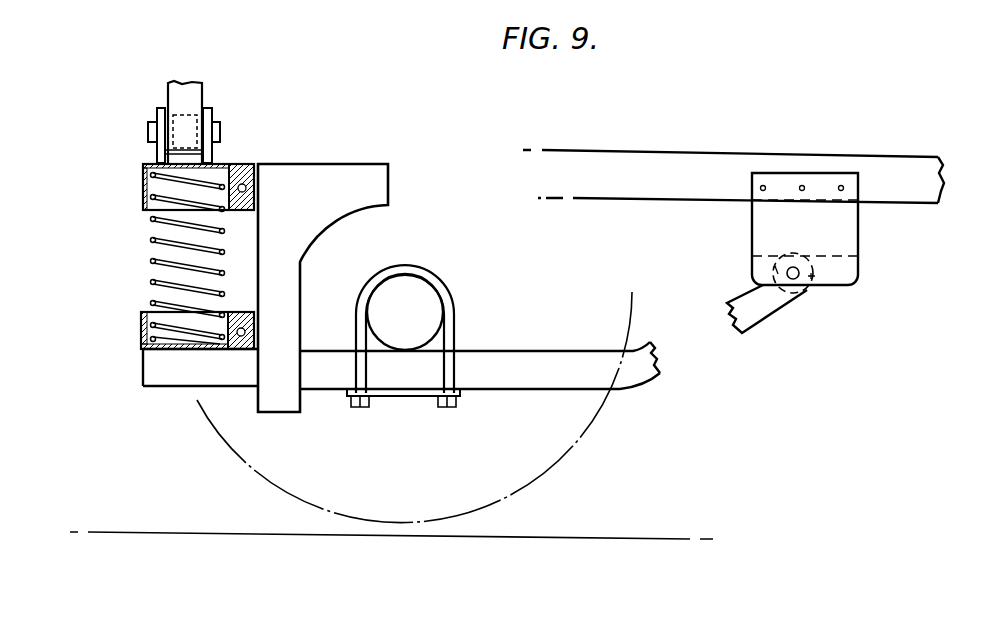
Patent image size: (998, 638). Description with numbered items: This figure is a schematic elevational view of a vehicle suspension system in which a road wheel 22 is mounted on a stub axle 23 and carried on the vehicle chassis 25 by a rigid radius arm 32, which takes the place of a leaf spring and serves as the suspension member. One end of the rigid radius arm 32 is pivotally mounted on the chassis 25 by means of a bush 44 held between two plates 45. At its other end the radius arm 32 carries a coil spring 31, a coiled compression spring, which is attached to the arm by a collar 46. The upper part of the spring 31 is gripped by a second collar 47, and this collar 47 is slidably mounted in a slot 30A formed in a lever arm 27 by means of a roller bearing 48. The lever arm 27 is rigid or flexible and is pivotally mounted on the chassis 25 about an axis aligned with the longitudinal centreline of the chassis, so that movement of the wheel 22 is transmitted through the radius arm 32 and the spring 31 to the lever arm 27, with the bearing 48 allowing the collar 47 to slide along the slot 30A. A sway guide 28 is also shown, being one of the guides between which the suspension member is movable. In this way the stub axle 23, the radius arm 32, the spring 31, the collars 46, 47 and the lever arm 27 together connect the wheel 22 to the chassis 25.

The road wheel 22 is at (537, 491).
The stub axle 23 is at (425, 293).
The vehicle chassis 25 is at (700, 160).
The lever arm 27 is at (185, 86).
The sway guide 28 is at (345, 202).
The slot 30A is at (198, 108).
The coil spring 31 is at (152, 260).
The rigid radius arm 32 is at (565, 358).
The bush 44 is at (822, 278).
The plates 45 is at (840, 237).
The collar 46 is at (140, 325).
The collar 47 is at (142, 185).
The roller bearing 48 is at (206, 158).